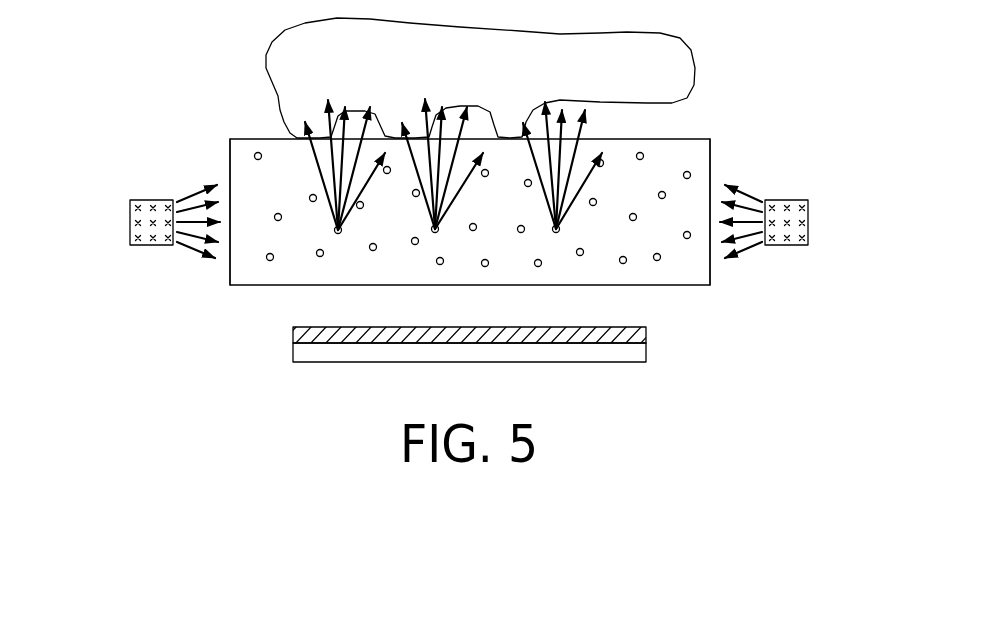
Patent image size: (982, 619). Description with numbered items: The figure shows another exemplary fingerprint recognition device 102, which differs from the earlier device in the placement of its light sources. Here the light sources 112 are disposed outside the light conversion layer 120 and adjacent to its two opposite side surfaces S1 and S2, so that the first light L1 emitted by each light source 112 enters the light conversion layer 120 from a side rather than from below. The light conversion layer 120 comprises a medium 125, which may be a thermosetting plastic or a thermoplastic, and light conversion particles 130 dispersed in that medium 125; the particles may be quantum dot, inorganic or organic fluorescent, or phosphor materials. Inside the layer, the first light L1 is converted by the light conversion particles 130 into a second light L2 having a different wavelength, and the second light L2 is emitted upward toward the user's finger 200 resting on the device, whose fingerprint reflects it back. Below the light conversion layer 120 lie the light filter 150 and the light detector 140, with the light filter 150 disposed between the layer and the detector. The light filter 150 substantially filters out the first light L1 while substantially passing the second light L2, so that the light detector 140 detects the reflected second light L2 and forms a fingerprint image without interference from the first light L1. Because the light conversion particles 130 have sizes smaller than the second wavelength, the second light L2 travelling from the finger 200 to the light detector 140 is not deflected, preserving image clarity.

The fingerprint recognition device 102 is at (160, 89).
The light source 112 is at (130, 218).
The light conversion layer 120 is at (407, 259).
The medium 125 is at (280, 278).
The light conversion particles 130 is at (268, 262).
The light detector 140 is at (644, 351).
The light filter 150 is at (646, 331).
The finger 200 is at (684, 70).
The first side surface S1 is at (228, 157).
The second side surface S2 is at (713, 157).
The first light L1 is at (752, 192).
The second light L2 is at (322, 175).